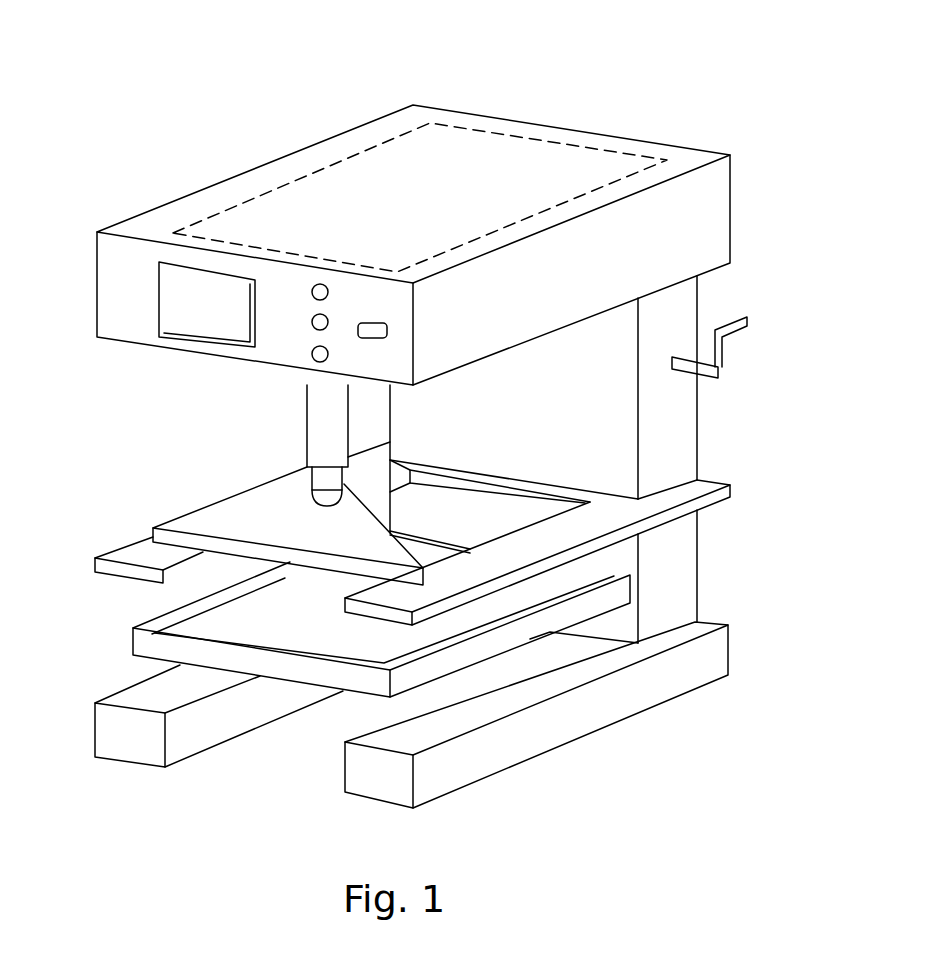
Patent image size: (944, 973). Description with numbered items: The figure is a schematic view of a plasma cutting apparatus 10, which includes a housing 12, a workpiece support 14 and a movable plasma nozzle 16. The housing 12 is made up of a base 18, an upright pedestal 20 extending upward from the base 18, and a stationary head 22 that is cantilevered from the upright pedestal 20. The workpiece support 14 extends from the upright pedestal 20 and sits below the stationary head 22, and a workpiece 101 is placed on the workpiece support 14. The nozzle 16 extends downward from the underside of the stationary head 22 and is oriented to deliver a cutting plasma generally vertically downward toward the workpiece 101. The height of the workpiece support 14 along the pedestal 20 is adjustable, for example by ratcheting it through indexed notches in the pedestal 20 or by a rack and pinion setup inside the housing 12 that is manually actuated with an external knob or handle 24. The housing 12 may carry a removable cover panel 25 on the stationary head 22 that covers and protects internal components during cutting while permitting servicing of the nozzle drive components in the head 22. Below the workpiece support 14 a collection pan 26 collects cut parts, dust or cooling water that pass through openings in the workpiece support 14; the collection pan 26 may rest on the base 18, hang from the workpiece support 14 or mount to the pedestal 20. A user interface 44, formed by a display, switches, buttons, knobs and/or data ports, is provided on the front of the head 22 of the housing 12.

The plasma cutting apparatus 10 is at (594, 54).
The housing 12 is at (785, 149).
The workpiece support 14 is at (113, 550).
The movable plasma nozzle 16 is at (305, 441).
The base 18 is at (562, 730).
The upright pedestal 20 is at (680, 422).
The stationary head 22 is at (220, 194).
The knob or handle 24 is at (722, 360).
The removable cover panel 25 is at (596, 140).
The collection pan 26 is at (135, 643).
The user interface 44 is at (222, 348).
The workpiece 101 is at (200, 523).